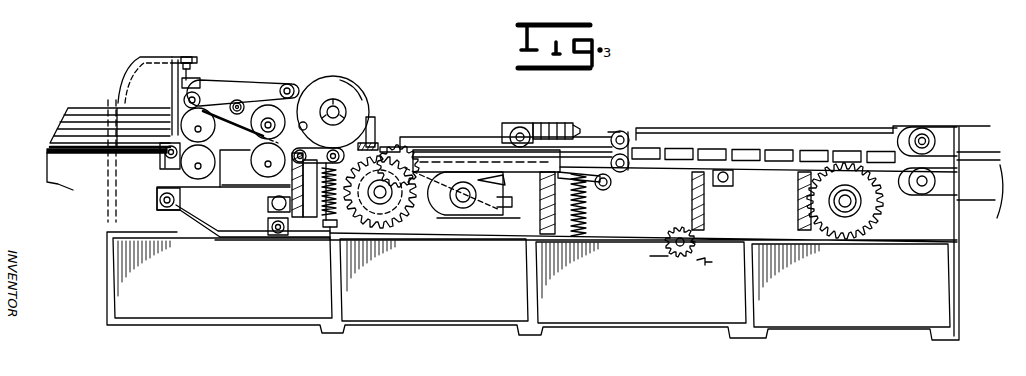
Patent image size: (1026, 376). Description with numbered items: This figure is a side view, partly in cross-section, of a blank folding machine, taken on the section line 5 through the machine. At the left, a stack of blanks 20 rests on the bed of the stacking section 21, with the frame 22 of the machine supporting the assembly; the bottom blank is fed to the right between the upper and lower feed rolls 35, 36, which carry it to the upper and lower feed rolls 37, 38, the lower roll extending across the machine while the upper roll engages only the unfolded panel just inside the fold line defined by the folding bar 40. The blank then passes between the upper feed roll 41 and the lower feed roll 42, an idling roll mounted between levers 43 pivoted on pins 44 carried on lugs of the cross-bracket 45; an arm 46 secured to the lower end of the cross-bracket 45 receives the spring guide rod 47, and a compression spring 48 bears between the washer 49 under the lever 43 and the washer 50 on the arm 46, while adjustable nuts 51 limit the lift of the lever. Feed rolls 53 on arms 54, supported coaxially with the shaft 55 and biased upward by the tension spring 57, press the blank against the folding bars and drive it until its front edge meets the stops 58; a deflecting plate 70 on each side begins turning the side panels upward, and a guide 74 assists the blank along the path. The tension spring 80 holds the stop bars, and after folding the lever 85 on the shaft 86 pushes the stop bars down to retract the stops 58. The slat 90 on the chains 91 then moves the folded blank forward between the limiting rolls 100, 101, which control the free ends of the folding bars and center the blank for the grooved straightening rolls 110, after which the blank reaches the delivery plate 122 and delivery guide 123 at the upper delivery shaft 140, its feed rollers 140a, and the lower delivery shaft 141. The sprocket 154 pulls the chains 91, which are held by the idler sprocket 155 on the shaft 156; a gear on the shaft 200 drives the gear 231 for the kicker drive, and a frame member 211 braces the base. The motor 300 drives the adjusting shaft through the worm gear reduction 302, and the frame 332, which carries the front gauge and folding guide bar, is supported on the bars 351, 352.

The section line 5 is at (1003, 15).
The blanks 20 is at (84, 106).
The stacking section 21 is at (123, 61).
The feed tray 22 is at (87, 157).
The upper feed roll 35 is at (198, 125).
The lower feed roll 36 is at (198, 162).
The upper feed roll 37 is at (268, 122).
The lower feed roll 38 is at (268, 160).
The folding bar 40 is at (401, 147).
The upper feed roll 41 is at (346, 78).
The lower feed roll 42 is at (340, 157).
The lever 43 is at (329, 100).
The pin 44 is at (298, 123).
The cross-bracket 45 is at (302, 243).
The arm 46 is at (312, 225).
The spring guide rod 47 is at (158, 208).
The compression spring 48 is at (366, 134).
The washer 49 is at (305, 152).
The washer 50 is at (318, 232).
The adjustable nuts 51 is at (330, 236).
The feed rolls 53 is at (404, 151).
The arm 54 is at (426, 195).
The shaft 55 is at (463, 208).
The tension spring 57 is at (488, 208).
The stop 58 is at (514, 134).
The deflecting plate 70 is at (245, 148).
The conveyor link 74 is at (662, 148).
The tension spring 80 is at (570, 222).
The lever 85 is at (585, 182).
The shaft 86 is at (610, 186).
The slat 90 is at (350, 80).
The chains 91 is at (387, 147).
The limiting roll 100 is at (620, 131).
The limiting roll 101 is at (651, 150).
The straightening rolls 110 is at (778, 150).
The delivery plate 122 is at (981, 126).
The delivery guide 123 is at (980, 190).
The upper delivery shaft 140 is at (934, 137).
The feed roller pair 140a is at (607, 151).
The lower delivery shaft 141 is at (923, 194).
The sprocket 154 is at (868, 215).
The idler sprocket 155 is at (380, 192).
The shaft 156 is at (391, 235).
The shaft 200 is at (275, 203).
The frame member 211 is at (243, 200).
The gear 231 is at (238, 100).
The motor 300 is at (552, 126).
The worm gear reduction 302 is at (524, 128).
The frame 332 is at (228, 80).
The bar 351 is at (193, 97).
The bar 352 is at (289, 87).